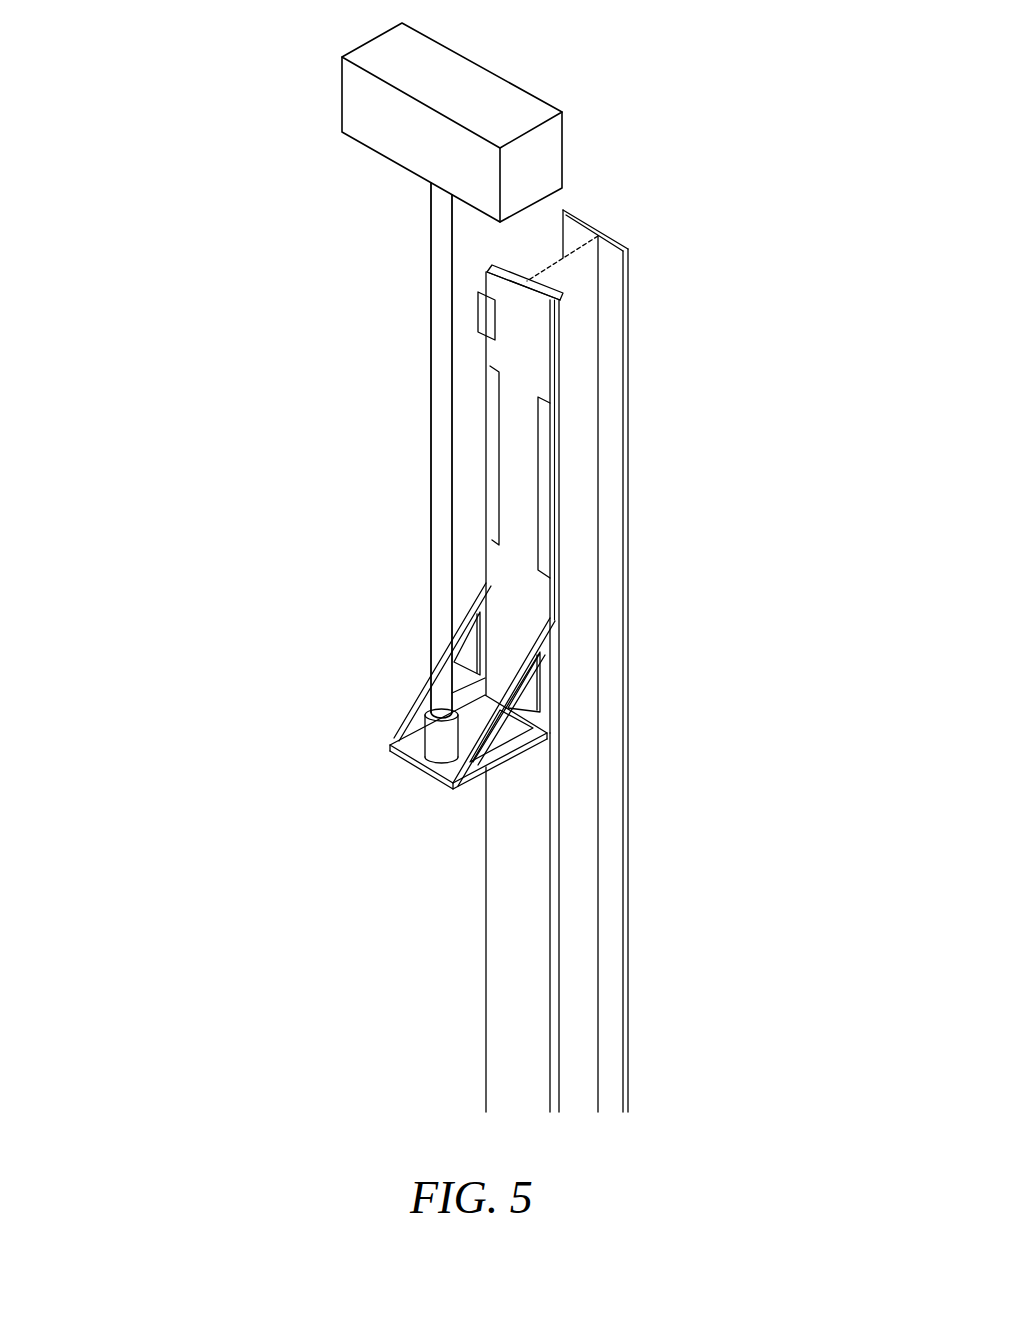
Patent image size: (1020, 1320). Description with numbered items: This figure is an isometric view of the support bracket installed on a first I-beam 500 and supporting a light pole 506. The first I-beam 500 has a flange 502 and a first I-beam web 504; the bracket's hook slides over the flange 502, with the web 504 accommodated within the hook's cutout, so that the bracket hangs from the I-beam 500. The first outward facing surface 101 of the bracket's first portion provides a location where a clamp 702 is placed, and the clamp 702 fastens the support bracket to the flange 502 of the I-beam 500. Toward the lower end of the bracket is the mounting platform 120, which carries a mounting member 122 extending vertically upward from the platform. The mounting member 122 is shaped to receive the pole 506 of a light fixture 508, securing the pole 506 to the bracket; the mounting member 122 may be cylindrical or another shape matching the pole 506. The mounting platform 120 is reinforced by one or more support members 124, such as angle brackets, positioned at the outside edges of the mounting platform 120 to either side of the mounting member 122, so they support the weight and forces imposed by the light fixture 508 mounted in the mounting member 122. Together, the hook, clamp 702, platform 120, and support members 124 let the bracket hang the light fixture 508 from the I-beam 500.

The light fixture 508 is at (160, 171).
The light pole 506 is at (437, 440).
The first I-beam web 504 is at (566, 281).
The first I-beam 500 is at (612, 683).
The first outward facing surface 101 is at (531, 355).
The clamp 702 is at (478, 318).
The mounting member 122 is at (437, 736).
The mounting platform 120 is at (447, 775).
The support member 124 is at (533, 720).
The flange 502 is at (520, 1049).